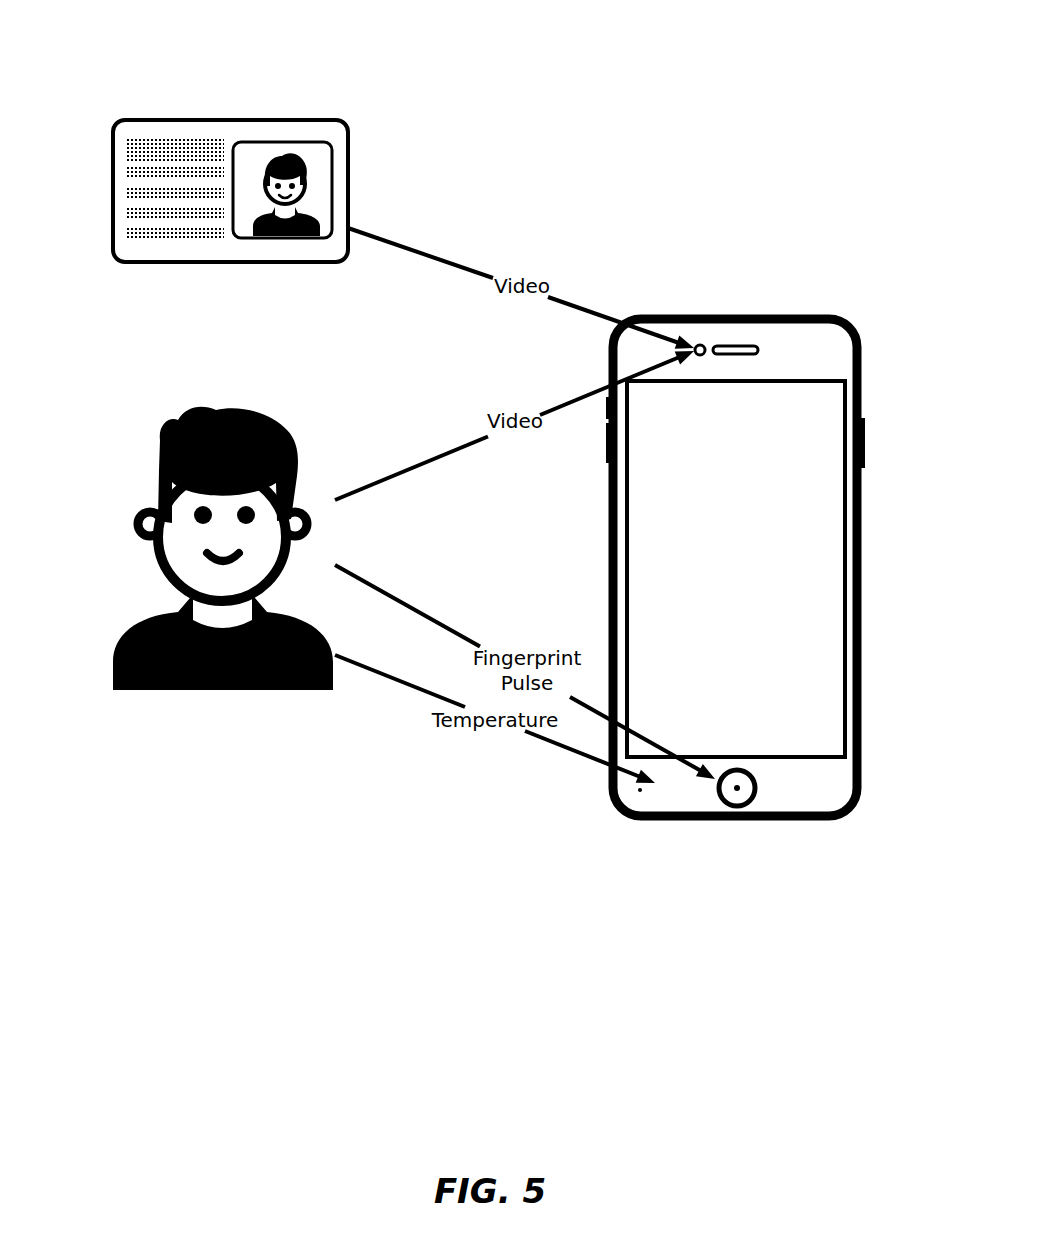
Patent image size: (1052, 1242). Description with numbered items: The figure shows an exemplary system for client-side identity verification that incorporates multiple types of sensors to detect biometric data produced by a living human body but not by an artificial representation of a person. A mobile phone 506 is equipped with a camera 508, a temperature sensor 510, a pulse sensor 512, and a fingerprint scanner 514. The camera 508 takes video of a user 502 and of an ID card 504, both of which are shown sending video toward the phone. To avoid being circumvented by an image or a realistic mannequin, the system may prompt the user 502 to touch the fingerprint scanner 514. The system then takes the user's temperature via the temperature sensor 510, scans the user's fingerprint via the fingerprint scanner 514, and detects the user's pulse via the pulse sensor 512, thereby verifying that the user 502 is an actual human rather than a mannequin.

The user 502 is at (128, 458).
The ID card 504 is at (80, 152).
The mobile phone 506 is at (885, 330).
The camera 508 is at (688, 334).
The temperature sensor 510 is at (624, 797).
The pulse sensor 512 is at (724, 800).
The fingerprint scanner 514 is at (766, 811).